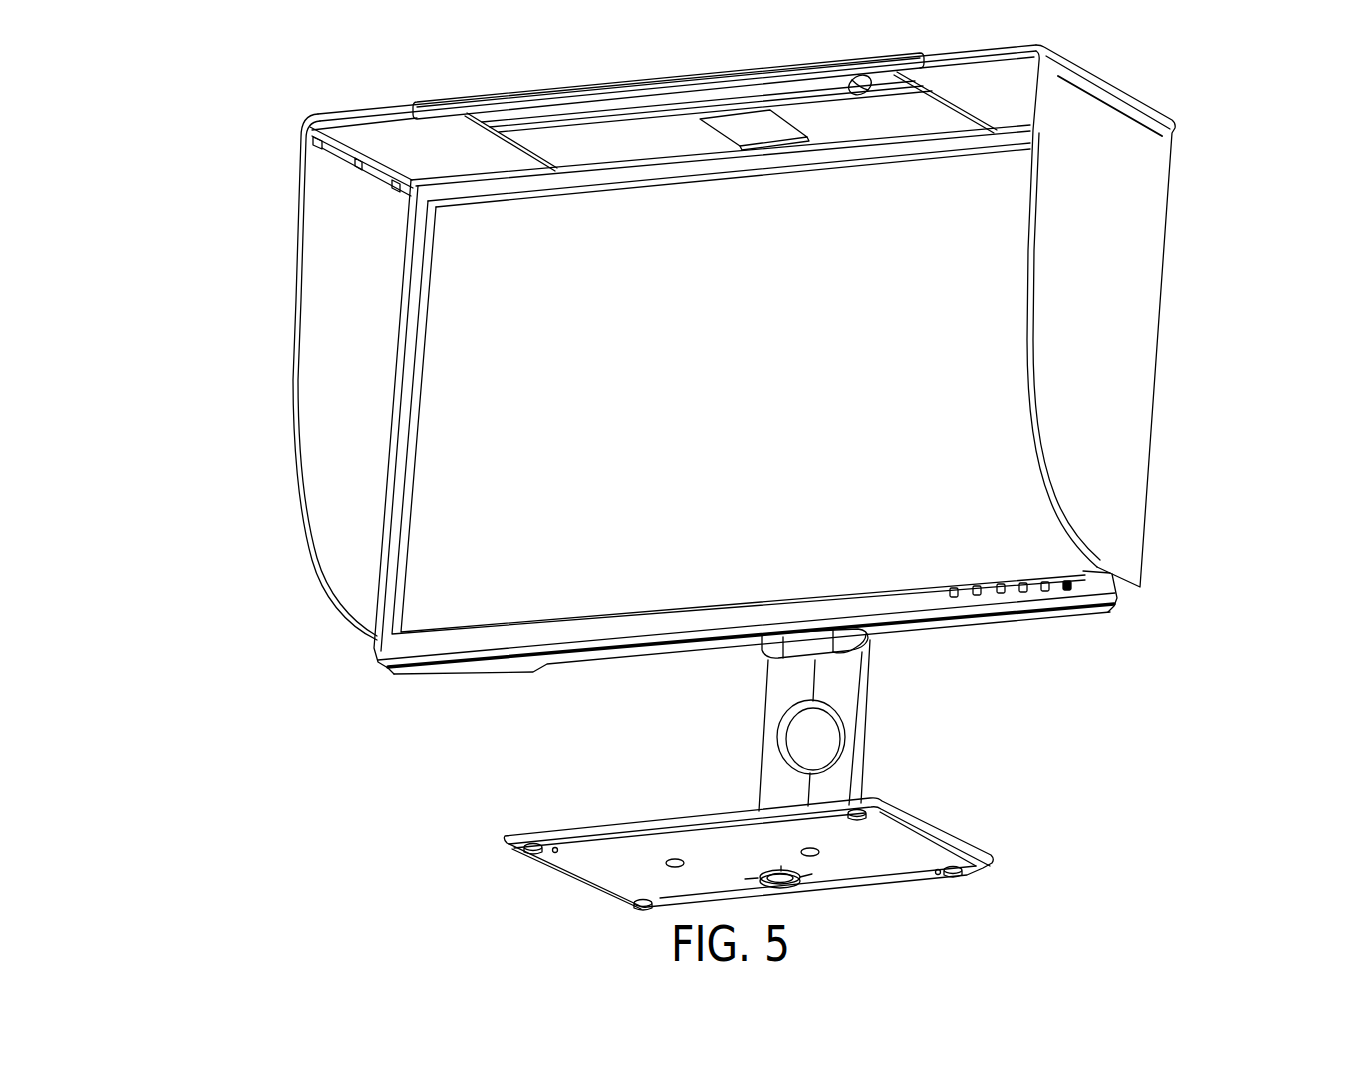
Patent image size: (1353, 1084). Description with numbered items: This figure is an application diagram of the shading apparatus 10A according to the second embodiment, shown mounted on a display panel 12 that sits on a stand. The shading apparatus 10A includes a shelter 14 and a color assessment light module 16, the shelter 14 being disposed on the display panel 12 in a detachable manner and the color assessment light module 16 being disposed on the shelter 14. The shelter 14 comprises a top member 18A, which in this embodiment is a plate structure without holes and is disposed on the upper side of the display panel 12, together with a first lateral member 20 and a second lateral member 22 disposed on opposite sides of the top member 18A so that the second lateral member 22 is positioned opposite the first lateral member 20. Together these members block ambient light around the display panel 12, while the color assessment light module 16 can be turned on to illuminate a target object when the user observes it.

The shading apparatus 10A is at (222, 103).
The display panel 12 is at (598, 582).
The shelter 14 is at (729, 341).
The color assessment light module 16 is at (565, 107).
The top member 18A is at (398, 128).
The first lateral member 20 is at (1117, 302).
The second lateral member 22 is at (340, 352).